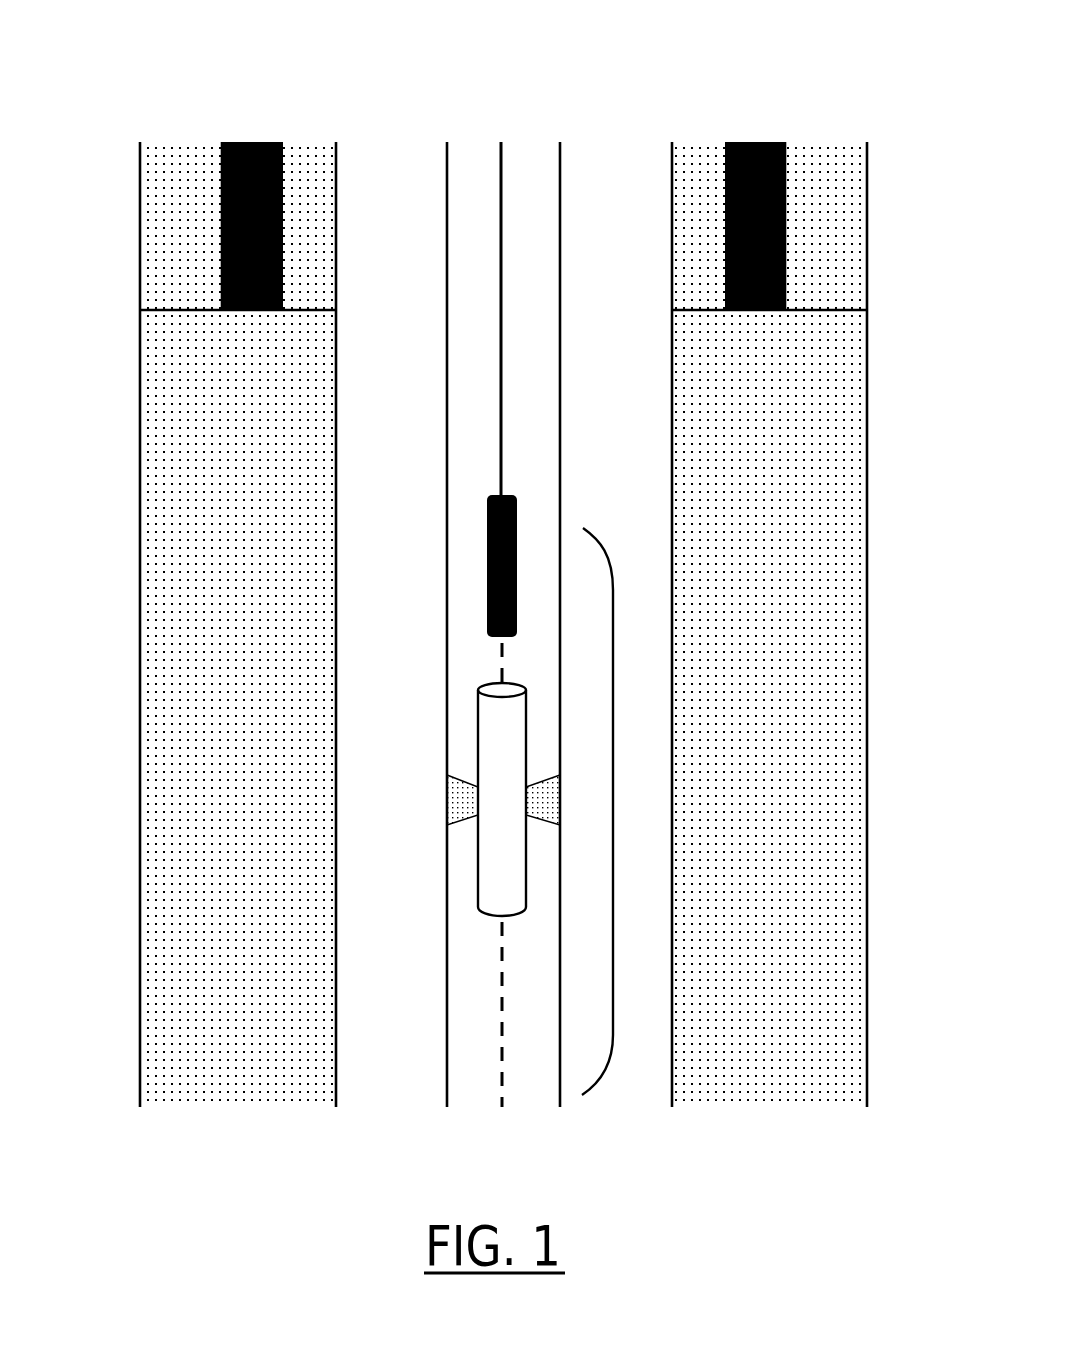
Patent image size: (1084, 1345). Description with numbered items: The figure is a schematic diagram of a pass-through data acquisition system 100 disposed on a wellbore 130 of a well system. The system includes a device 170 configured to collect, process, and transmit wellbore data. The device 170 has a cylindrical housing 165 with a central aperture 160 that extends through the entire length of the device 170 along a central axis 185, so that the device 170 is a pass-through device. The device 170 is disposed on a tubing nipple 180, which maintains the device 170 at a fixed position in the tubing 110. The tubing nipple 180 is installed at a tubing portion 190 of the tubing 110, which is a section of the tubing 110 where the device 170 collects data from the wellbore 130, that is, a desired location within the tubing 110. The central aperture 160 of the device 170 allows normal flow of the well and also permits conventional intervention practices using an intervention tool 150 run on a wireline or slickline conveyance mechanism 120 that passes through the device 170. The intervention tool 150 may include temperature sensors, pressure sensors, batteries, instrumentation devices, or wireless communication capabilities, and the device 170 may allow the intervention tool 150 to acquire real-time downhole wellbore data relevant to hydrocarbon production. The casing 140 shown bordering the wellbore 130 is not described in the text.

The pass-through data acquisition system 100 is at (126, 119).
The tubing 110 is at (447, 230).
The conveyance mechanism 120 is at (501, 180).
The wellbore 130 is at (672, 318).
The casing 140 is at (682, 178).
The intervention tool 150 is at (512, 533).
The central aperture 160 is at (496, 690).
The cylindrical housing 165 is at (496, 723).
The device 170 is at (496, 765).
The tubing nipple 180 is at (463, 807).
The central axis 185 is at (497, 975).
The tubing portion 190 is at (770, 811).